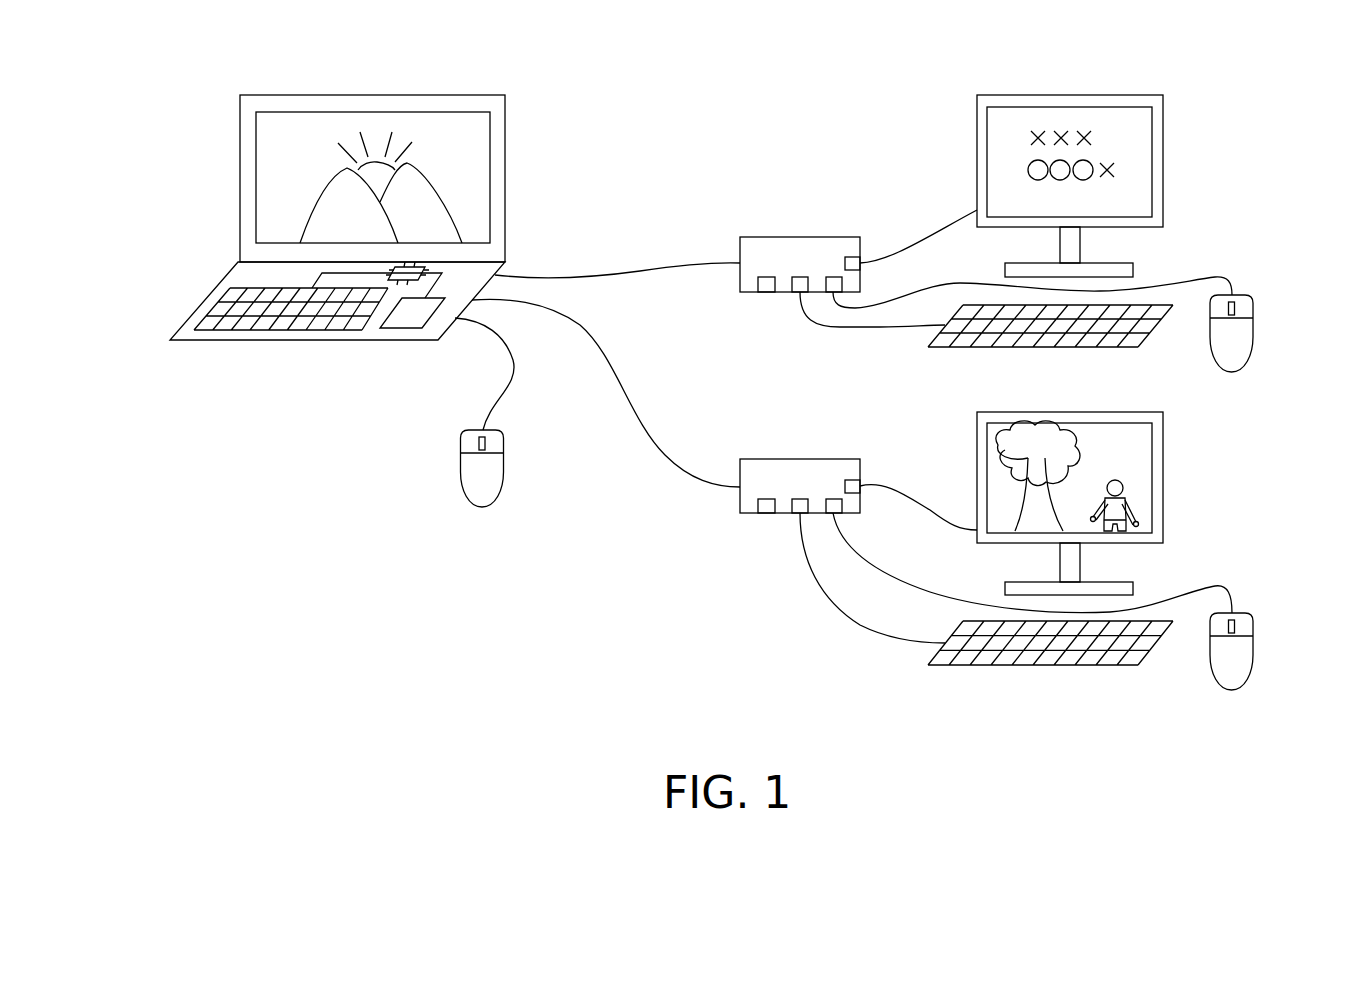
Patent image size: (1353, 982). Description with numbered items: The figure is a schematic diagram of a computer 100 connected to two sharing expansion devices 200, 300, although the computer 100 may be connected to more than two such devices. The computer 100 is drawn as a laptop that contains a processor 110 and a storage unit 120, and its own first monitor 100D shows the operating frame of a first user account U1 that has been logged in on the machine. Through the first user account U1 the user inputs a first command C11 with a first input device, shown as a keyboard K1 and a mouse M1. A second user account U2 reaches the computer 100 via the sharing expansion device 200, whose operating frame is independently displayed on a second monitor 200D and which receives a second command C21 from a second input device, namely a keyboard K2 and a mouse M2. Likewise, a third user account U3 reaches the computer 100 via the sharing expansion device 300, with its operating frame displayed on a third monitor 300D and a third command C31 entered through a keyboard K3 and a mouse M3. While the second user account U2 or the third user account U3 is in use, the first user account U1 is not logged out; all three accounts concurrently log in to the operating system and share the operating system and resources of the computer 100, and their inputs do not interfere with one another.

The computer 100 is at (217, 295).
The first monitor 100D is at (272, 146).
The processor 110 is at (413, 266).
The storage unit 120 is at (407, 315).
The first user account U1 is at (363, 280).
The keyboard K1 is at (275, 330).
The first command C11 is at (508, 374).
The mouse M1 is at (478, 503).
The second user account U2 is at (617, 260).
The third user account U3 is at (606, 393).
The sharing expansion device 200 is at (800, 237).
The second monitor 200D is at (1128, 95).
The second command C21 is at (1032, 278).
The keyboard K2 is at (1040, 347).
The mouse M2 is at (1253, 330).
The sharing expansion device 300 is at (800, 459).
The third monitor 300D is at (1128, 412).
The third command C31 is at (1032, 563).
The keyboard K3 is at (1040, 665).
The mouse M3 is at (1253, 648).